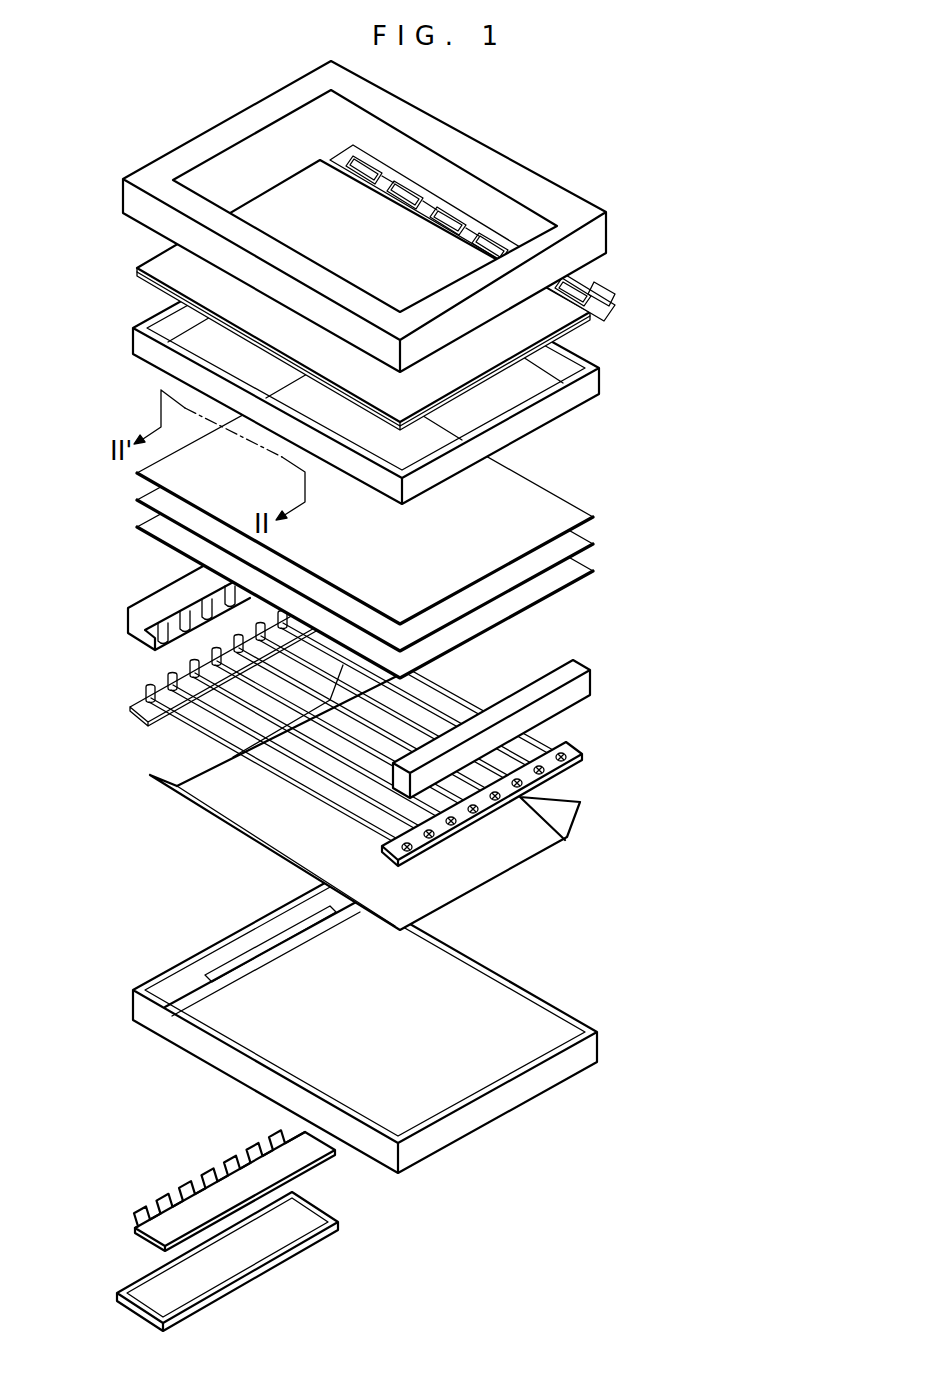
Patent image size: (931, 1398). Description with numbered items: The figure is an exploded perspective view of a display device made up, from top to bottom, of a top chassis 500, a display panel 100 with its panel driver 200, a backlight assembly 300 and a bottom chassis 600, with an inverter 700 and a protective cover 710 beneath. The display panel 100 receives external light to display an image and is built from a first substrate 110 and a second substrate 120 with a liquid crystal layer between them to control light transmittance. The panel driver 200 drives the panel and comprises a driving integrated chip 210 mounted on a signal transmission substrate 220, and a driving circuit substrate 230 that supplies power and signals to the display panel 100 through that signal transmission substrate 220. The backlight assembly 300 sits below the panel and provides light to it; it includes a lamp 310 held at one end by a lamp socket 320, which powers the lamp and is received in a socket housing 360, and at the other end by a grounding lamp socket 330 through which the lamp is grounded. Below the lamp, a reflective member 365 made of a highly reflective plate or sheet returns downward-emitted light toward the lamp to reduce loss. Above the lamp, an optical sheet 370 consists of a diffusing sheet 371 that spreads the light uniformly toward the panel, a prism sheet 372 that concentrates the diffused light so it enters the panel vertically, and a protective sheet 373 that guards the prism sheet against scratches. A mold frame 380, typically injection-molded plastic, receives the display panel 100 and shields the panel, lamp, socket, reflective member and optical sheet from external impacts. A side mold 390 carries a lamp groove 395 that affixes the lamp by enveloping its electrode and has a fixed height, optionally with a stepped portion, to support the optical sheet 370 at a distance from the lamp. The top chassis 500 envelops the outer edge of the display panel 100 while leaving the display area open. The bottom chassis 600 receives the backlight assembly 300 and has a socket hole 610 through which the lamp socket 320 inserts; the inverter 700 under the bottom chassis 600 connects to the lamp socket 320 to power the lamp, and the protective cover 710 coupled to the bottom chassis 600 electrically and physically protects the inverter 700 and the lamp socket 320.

The display panel 100 is at (436, 295).
The first substrate 110 is at (548, 322).
The second substrate 120 is at (587, 340).
The panel driver 200 is at (533, 233).
The driving integrated chip 210 is at (580, 285).
The signal transmission substrate 220 is at (600, 290).
The driving circuit substrate 230 is at (613, 300).
The backlight assembly 300 is at (431, 574).
The lamp 310 is at (537, 740).
The lamp socket 320 is at (147, 699).
The grounding lamp socket 330 is at (563, 748).
The socket housing 360 is at (136, 712).
The reflective member 365 is at (565, 820).
The optical sheet 370 is at (436, 522).
The diffusing sheet 371 is at (583, 558).
The prism sheet 372 is at (583, 530).
The protective sheet 373 is at (587, 503).
The mold frame 380 is at (433, 361).
The side mold 390 is at (573, 659).
The lamp groove 395 is at (172, 635).
The top chassis 500 is at (583, 212).
The bottom chassis 600 is at (325, 1026).
The socket hole 610 is at (213, 990).
The inverter 700 is at (138, 1217).
The protective cover 710 is at (116, 1293).